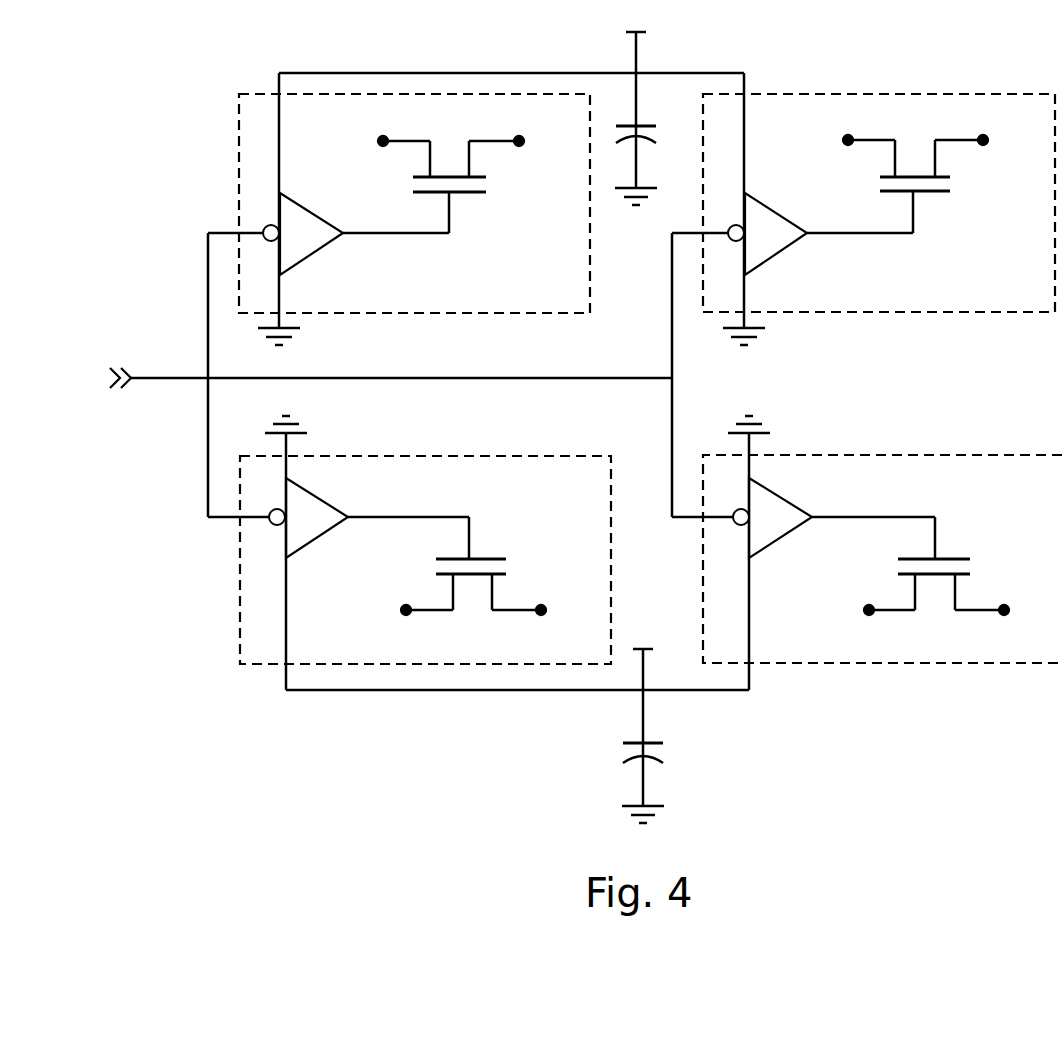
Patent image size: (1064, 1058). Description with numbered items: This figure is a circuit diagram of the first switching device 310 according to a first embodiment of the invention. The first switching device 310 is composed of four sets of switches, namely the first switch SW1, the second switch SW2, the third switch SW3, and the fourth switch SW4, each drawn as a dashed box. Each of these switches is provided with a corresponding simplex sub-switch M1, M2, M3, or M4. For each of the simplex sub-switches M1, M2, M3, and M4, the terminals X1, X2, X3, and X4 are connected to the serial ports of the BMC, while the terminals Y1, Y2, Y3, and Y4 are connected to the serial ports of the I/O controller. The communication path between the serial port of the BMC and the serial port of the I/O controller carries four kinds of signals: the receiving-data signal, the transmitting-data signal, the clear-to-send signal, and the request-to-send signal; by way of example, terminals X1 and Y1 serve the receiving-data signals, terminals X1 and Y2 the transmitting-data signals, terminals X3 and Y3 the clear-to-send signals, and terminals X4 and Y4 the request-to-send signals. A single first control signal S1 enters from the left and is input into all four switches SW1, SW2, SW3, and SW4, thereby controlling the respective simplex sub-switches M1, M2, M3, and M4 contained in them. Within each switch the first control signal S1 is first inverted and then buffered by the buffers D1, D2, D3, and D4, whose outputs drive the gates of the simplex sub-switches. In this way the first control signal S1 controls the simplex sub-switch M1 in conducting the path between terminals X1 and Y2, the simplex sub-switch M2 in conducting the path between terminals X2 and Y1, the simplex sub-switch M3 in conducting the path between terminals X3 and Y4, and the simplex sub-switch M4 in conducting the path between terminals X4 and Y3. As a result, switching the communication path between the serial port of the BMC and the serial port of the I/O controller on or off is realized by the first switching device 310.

The first switching device 310 is at (1042, 805).
The first control signal S1 is at (370, 381).
The first switch SW1 is at (438, 314).
The second switch SW2 is at (902, 313).
The third switch SW3 is at (448, 455).
The fourth switch SW4 is at (910, 455).
The buffer D1 is at (305, 258).
The buffer D2 is at (770, 260).
The buffer D3 is at (310, 543).
The buffer D4 is at (773, 543).
The simplex sub-switch M1 is at (493, 197).
The simplex sub-switch M2 is at (958, 195).
The simplex sub-switch M3 is at (515, 555).
The simplex sub-switch M4 is at (978, 555).
The terminal X1 is at (398, 128).
The terminal X2 is at (863, 128).
The terminal X3 is at (421, 630).
The terminal X4 is at (884, 630).
The terminal Y1 is at (965, 128).
The terminal Y2 is at (501, 128).
The terminal Y3 is at (986, 630).
The terminal Y4 is at (523, 630).